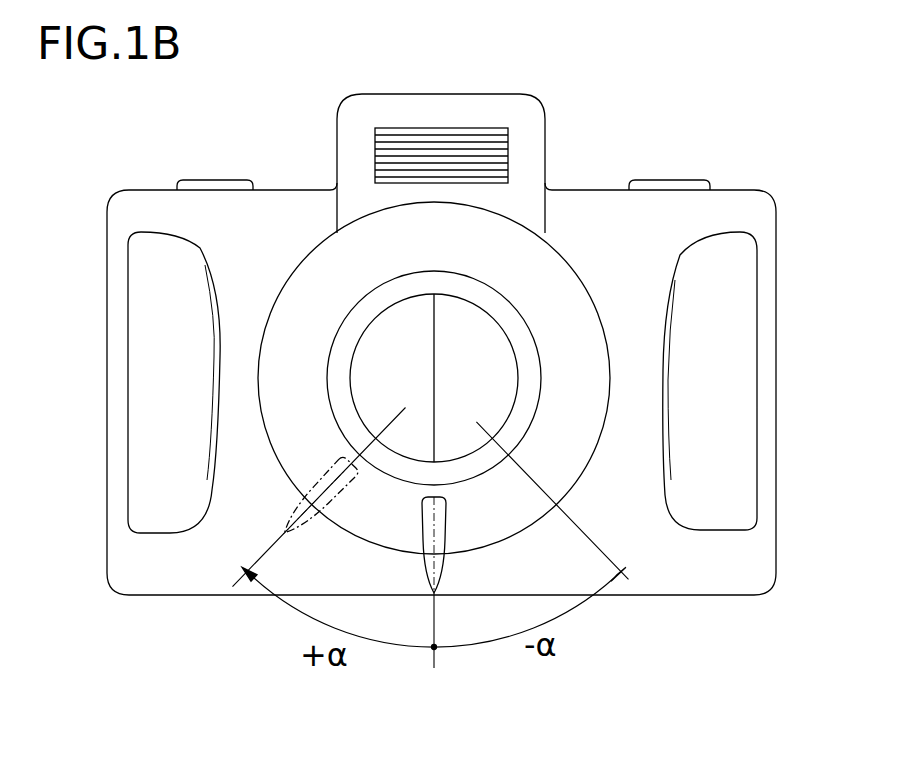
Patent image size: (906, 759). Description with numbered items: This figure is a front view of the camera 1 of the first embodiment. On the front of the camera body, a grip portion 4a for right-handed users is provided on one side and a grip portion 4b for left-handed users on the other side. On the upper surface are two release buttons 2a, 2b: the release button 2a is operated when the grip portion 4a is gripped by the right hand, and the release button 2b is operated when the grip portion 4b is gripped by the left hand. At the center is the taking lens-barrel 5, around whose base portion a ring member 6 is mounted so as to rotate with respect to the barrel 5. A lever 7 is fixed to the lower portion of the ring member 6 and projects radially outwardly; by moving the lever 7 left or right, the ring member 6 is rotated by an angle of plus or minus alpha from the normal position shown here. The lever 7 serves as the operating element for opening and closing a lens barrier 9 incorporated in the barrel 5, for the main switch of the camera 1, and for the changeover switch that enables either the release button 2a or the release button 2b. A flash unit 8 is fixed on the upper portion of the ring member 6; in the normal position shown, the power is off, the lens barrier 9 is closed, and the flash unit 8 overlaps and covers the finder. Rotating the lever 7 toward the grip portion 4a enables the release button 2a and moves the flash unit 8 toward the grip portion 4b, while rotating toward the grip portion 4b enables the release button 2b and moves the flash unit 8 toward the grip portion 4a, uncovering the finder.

The camera 1 is at (488, 88).
The release button for right-handed users 2a is at (215, 180).
The release button for left-handed users 2b is at (660, 182).
The grip portion for right-handed users 4a is at (130, 318).
The grip portion for left-handed users 4b is at (740, 345).
The taking lens-barrel 5 is at (510, 318).
The ring member 6 is at (595, 425).
The lever 7 is at (297, 500).
The flash unit 8 is at (495, 150).
The lens barrier 9 is at (497, 372).